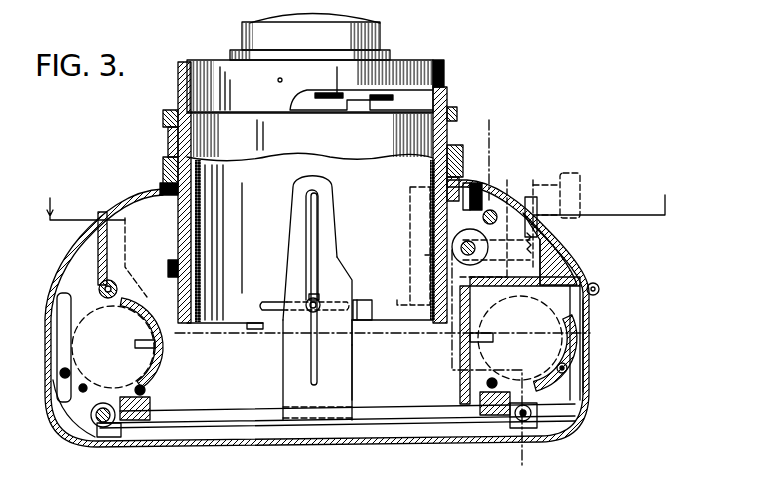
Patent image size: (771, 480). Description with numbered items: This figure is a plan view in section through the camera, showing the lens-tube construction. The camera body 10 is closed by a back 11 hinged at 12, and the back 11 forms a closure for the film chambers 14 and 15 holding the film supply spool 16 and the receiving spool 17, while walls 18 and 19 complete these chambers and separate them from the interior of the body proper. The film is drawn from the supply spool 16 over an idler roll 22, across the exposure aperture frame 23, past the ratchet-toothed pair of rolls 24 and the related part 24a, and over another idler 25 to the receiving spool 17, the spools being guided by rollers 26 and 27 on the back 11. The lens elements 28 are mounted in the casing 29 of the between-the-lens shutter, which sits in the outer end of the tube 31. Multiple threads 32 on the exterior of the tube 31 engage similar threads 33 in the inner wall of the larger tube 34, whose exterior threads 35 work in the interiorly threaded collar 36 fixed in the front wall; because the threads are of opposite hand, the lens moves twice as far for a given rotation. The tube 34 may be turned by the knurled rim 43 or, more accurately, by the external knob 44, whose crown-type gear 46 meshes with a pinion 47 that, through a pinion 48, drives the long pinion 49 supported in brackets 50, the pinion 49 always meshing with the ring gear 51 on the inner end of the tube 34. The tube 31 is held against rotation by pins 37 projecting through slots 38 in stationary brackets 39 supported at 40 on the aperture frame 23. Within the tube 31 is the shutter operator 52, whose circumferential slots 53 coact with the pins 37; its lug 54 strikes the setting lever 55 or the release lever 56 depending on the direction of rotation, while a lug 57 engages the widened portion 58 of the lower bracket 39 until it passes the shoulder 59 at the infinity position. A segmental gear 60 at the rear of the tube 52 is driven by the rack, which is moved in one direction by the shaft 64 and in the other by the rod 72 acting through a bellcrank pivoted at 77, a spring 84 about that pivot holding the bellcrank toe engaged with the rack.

The lens elements 28 is at (250, 24).
The casing 29 is at (440, 62).
The tube 31 is at (447, 84).
The multiple threads 32 is at (178, 87).
The knurled rim 43 is at (163, 116).
The threads 33 is at (168, 133).
The tube 34 is at (163, 165).
The collar 36 is at (160, 188).
The exterior threads 35 is at (455, 125).
The pivot 77 is at (463, 175).
The spring 84 is at (490, 178).
The rod 72 is at (498, 196).
The crown-type gear 46 is at (522, 183).
The back 11 is at (363, 461).
The external knob 44 is at (580, 207).
The body 10 is at (545, 248).
The pinion 47 is at (560, 253).
The hinge 12 is at (599, 289).
The film supply spool 16 is at (570, 336).
The roller 26 is at (568, 369).
The film chamber 14 is at (589, 392).
The idler roll 22 is at (531, 420).
The exposure aperture frame 23 is at (398, 417).
The wall 18 is at (458, 356).
The pinion 48 is at (498, 288).
The widened portion 58 is at (354, 370).
The lug 57 is at (354, 335).
The segmental gear 60 is at (256, 330).
The support 40 is at (283, 396).
The wall 19 is at (158, 370).
The film receiving spool 17 is at (60, 333).
The roller 27 is at (60, 373).
The idler 25 is at (79, 390).
The film chamber 15 is at (66, 415).
The plate 24a is at (97, 437).
The ratchet-toothed pair of rolls 24 is at (112, 426).
The ring gear 51 is at (168, 265).
The circumferential slots 53 is at (306, 304).
The pins 37 is at (309, 296).
The slots 38 is at (311, 244).
The brackets 39 is at (294, 222).
The shoulder 59 is at (342, 264).
The long pinion 49 is at (416, 244).
The shaft 64 is at (433, 257).
The brackets 50 is at (410, 304).
The shutter operator 52 is at (433, 167).
The lug 54 is at (358, 108).
The setting lever 55 is at (324, 99).
The release lever 56 is at (393, 98).